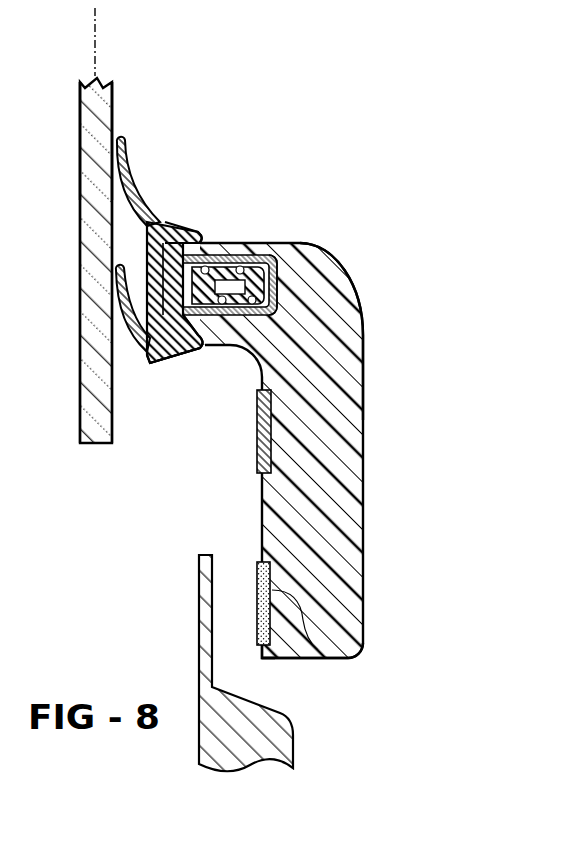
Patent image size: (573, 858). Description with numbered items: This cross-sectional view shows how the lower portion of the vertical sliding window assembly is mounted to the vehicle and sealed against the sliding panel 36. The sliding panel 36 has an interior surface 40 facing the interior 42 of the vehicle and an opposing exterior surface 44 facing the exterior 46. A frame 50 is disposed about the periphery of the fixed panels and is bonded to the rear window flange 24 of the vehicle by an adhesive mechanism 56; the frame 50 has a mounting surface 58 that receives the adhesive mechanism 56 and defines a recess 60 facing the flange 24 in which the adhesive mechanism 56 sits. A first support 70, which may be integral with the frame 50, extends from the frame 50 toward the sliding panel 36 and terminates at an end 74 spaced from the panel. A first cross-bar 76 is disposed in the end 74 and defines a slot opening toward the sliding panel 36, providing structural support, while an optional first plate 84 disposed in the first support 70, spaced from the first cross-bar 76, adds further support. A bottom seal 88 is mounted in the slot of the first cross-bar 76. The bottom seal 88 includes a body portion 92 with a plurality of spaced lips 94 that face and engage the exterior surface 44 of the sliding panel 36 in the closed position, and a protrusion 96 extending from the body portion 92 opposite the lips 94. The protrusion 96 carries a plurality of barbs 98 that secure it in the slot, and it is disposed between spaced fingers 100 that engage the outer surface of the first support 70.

The flange 24 is at (206, 604).
The sliding panel 36 is at (80, 213).
The interior surface 40 is at (77, 105).
The interior 42 is at (30, 86).
The exterior surface 44 is at (116, 106).
The exterior 46 is at (157, 83).
The frame 50 is at (369, 497).
The adhesive mechanism 56 is at (255, 592).
The mounting surface 58 is at (250, 648).
The recess 60 is at (332, 656).
The first support 70 is at (369, 405).
The end 74 is at (150, 318).
The first cross-bar 76 is at (249, 256).
The first plate 84 is at (257, 432).
The bottom seal 88 is at (166, 370).
The body portion 92 is at (192, 267).
The lip 94 is at (130, 173).
The protrusion 96 is at (278, 285).
The barbs 98 is at (260, 292).
The fingers 100 is at (186, 222).